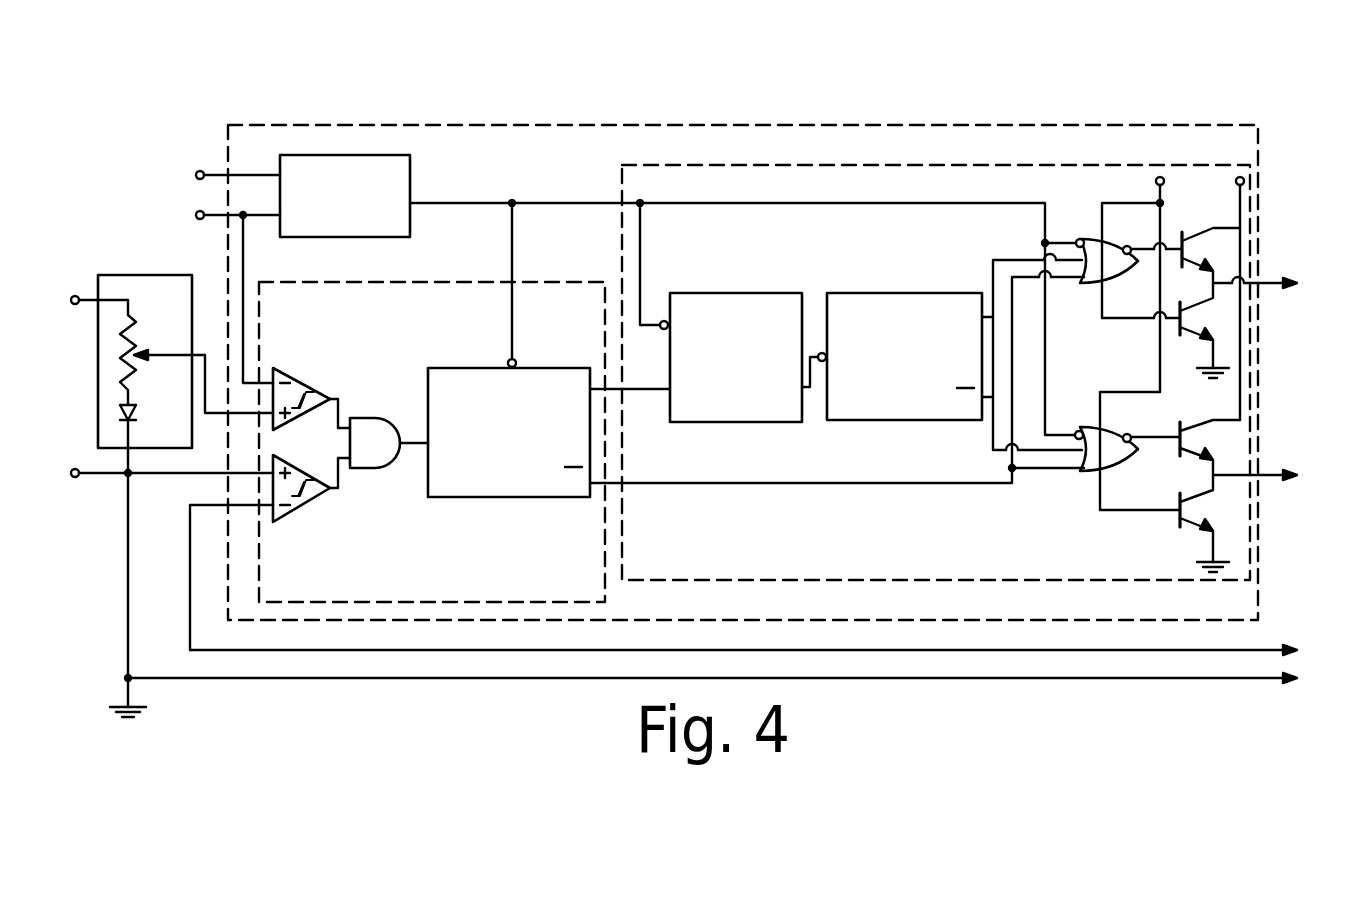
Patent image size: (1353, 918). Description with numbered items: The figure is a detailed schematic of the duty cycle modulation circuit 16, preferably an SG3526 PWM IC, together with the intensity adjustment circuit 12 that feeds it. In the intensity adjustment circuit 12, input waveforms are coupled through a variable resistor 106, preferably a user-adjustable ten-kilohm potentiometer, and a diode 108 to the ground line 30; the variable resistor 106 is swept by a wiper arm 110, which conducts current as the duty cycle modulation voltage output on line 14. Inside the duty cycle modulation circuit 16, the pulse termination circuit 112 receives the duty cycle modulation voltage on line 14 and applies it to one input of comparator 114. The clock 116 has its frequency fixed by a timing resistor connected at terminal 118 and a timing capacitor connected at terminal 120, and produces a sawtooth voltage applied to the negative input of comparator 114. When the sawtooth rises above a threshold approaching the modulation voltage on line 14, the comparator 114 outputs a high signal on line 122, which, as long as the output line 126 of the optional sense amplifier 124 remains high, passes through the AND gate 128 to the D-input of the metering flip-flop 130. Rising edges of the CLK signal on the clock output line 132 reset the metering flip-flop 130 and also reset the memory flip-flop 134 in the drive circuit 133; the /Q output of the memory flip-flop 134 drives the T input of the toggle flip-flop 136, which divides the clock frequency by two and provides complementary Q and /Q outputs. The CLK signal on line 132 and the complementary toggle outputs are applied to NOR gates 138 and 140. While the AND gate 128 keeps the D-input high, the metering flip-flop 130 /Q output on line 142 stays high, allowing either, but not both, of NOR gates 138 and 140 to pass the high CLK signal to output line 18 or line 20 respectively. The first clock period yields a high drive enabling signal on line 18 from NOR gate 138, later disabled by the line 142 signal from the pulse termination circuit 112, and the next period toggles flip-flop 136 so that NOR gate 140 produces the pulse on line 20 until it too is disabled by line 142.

The intensity adjustment circuit 12 is at (139, 274).
The line 14 is at (216, 420).
The duty cycle modulation circuit 16 is at (466, 93).
The line 18 is at (1271, 284).
The line 20 is at (1271, 472).
The ground line 30 is at (1166, 680).
The variable resistor 106 is at (135, 332).
The diode 108 is at (133, 412).
The wiper arm 110 is at (179, 359).
The pulse termination circuit 112 is at (452, 592).
The comparator 114 is at (292, 371).
The clock 116 is at (354, 227).
The terminal 118 is at (227, 173).
The terminal 120 is at (227, 217).
The line 122 is at (343, 410).
The sense amplifier 124 is at (328, 521).
The output line 126 is at (339, 470).
The AND gate 128 is at (382, 459).
The metering flip-flop 130 is at (516, 485).
The output line 132 is at (545, 202).
The drive circuit 133 is at (942, 556).
The memory flip-flop 134 is at (742, 402).
The toggle flip-flop 136 is at (897, 402).
The NOR gate 138 is at (1100, 250).
The NOR gate 140 is at (1089, 477).
The line 142 is at (979, 480).